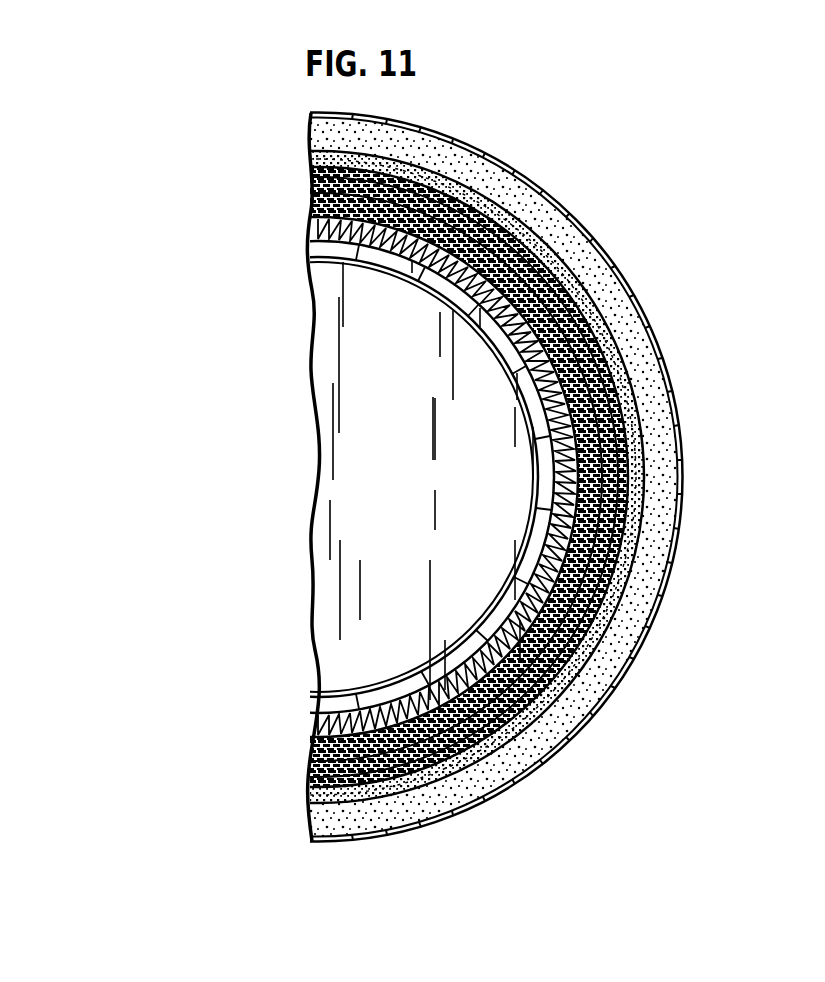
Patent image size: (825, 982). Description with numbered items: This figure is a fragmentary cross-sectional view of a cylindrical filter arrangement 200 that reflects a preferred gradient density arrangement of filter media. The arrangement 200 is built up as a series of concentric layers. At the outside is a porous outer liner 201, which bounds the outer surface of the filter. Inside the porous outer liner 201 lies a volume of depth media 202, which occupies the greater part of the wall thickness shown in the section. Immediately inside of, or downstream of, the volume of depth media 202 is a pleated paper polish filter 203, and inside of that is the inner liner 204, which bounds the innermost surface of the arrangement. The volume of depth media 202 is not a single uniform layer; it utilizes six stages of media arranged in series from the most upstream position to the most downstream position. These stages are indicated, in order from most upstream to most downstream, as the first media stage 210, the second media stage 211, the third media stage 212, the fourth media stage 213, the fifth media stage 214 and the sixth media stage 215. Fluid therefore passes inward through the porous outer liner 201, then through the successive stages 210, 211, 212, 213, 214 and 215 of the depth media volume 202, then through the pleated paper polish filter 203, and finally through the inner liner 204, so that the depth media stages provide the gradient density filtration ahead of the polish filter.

The cylindrical filter arrangement 200 is at (622, 134).
The porous outer liner 201 is at (648, 317).
The volume of depth media 202 is at (665, 471).
The pleated paper polish filter 203 is at (577, 522).
The inner liner 204 is at (572, 596).
The first media stage 210 is at (623, 303).
The second media stage 211 is at (593, 297).
The third media stage 212 is at (622, 350).
The fourth media stage 213 is at (613, 377).
The fifth media stage 214 is at (603, 410).
The sixth media stage 215 is at (597, 603).